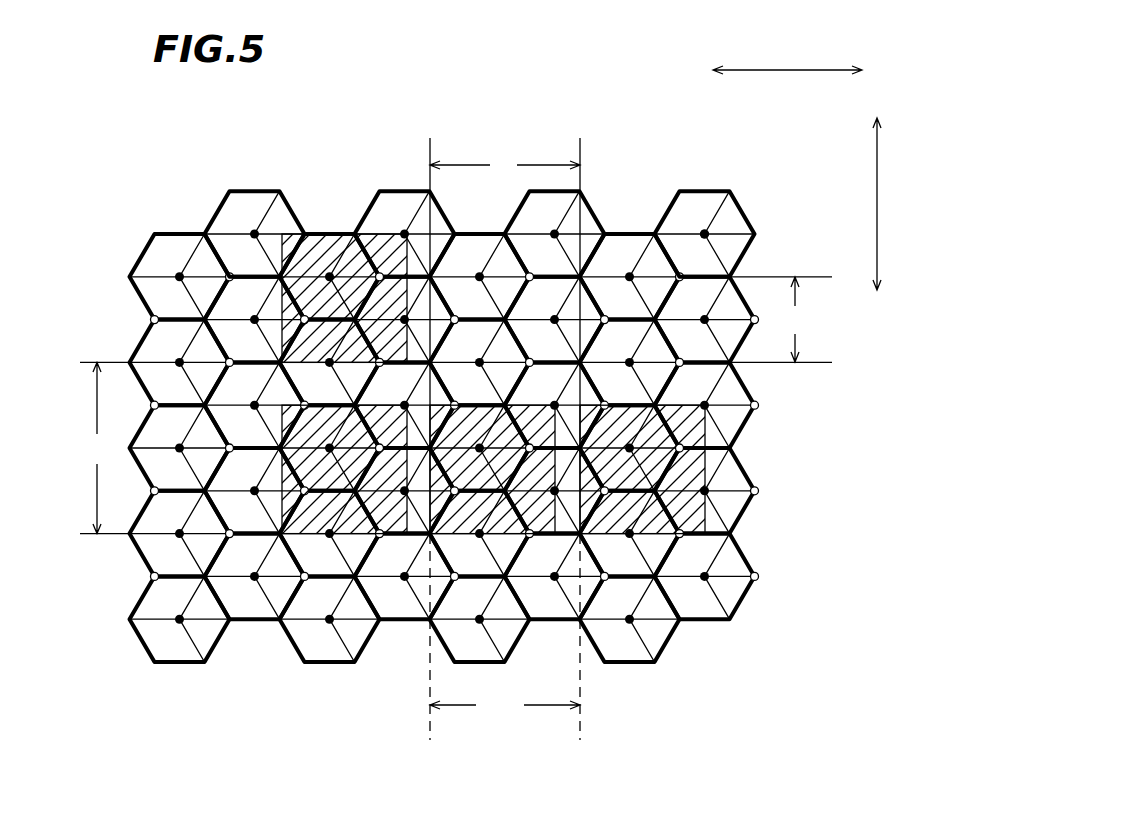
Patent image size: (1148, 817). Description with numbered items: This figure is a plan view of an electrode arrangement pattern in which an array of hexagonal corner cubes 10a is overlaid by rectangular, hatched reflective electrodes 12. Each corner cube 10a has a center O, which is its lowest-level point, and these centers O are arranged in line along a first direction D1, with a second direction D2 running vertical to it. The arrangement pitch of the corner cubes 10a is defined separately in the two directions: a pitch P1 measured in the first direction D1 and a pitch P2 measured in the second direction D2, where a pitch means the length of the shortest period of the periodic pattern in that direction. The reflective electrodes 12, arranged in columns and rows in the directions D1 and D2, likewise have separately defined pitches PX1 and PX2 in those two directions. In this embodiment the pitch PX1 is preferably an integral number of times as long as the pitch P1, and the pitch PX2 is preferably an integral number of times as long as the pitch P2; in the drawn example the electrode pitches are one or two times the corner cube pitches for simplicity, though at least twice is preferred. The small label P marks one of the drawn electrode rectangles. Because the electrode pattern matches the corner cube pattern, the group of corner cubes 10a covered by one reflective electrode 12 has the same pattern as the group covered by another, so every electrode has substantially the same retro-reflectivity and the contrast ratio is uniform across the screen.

The corner cube 10a is at (252, 208).
The reflective electrode 12 is at (283, 236).
The center of corner cube O is at (706, 232).
The pixel P is at (642, 467).
The pitch in first direction P1 is at (781, 320).
The pitch in second direction P2 is at (505, 165).
The pitch of reflective electrodes in first direction PX1 is at (101, 447).
The pitch of reflective electrodes in second direction PX2 is at (505, 706).
The first direction D1 is at (895, 204).
The second direction D2 is at (787, 59).